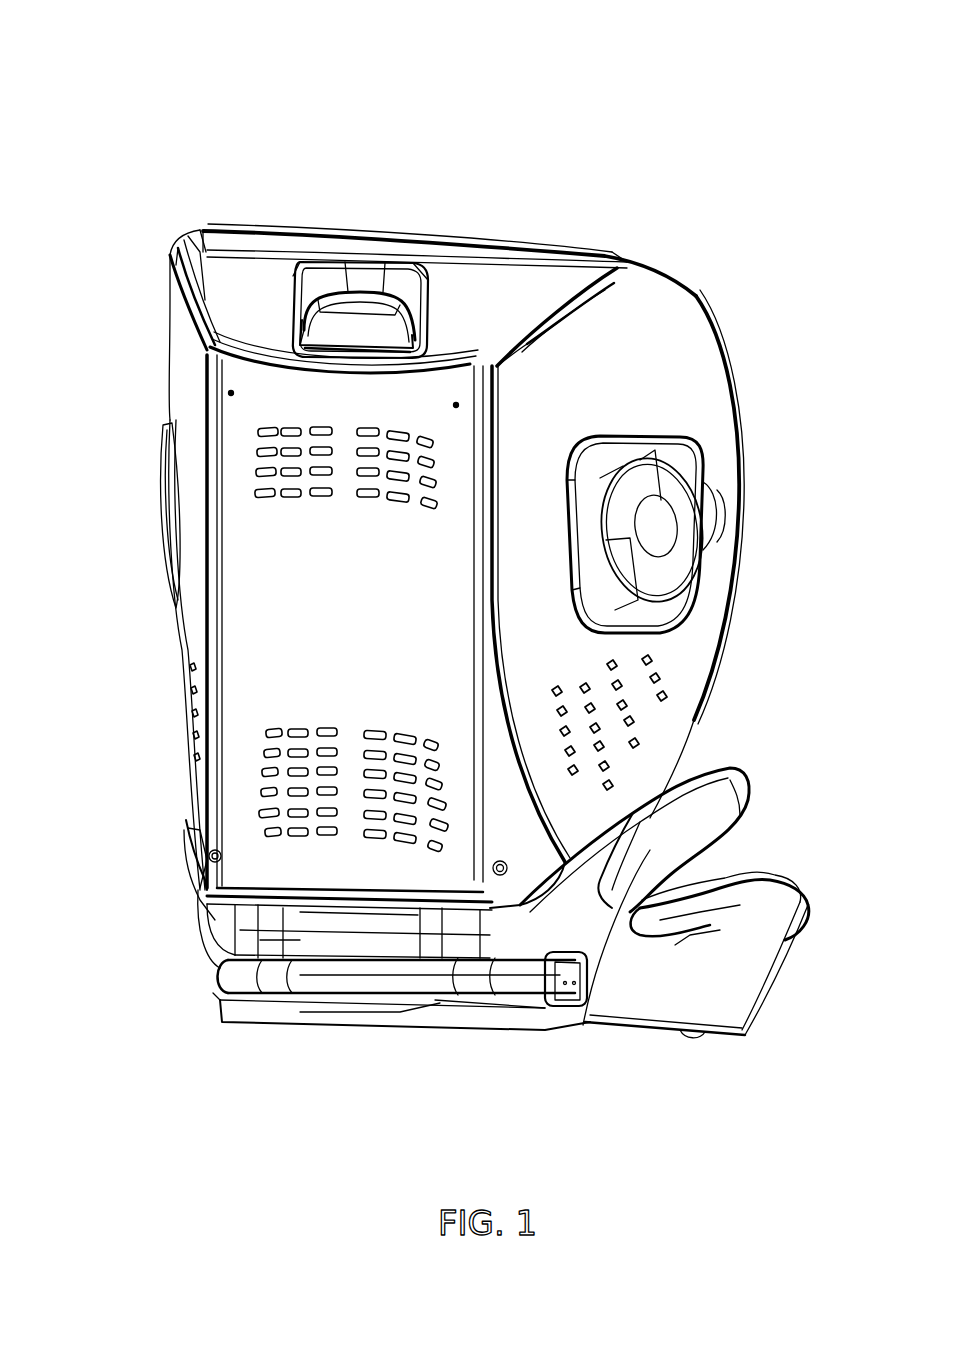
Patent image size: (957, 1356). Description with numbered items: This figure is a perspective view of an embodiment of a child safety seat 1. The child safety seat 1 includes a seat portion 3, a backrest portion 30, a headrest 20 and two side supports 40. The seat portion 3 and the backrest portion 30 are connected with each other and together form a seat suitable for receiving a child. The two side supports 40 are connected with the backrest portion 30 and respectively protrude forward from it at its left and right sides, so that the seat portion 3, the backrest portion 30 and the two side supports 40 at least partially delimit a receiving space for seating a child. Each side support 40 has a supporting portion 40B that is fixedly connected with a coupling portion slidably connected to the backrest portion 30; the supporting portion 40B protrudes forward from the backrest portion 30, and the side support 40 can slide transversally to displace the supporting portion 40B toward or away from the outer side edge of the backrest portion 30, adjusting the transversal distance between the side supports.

The child safety seat 1 is at (131, 86).
The headrest 20 is at (500, 262).
The backrest portion 30 is at (283, 348).
The side support 40 is at (170, 350).
The supporting portion 40B is at (193, 640).
The seat portion 3 is at (660, 995).